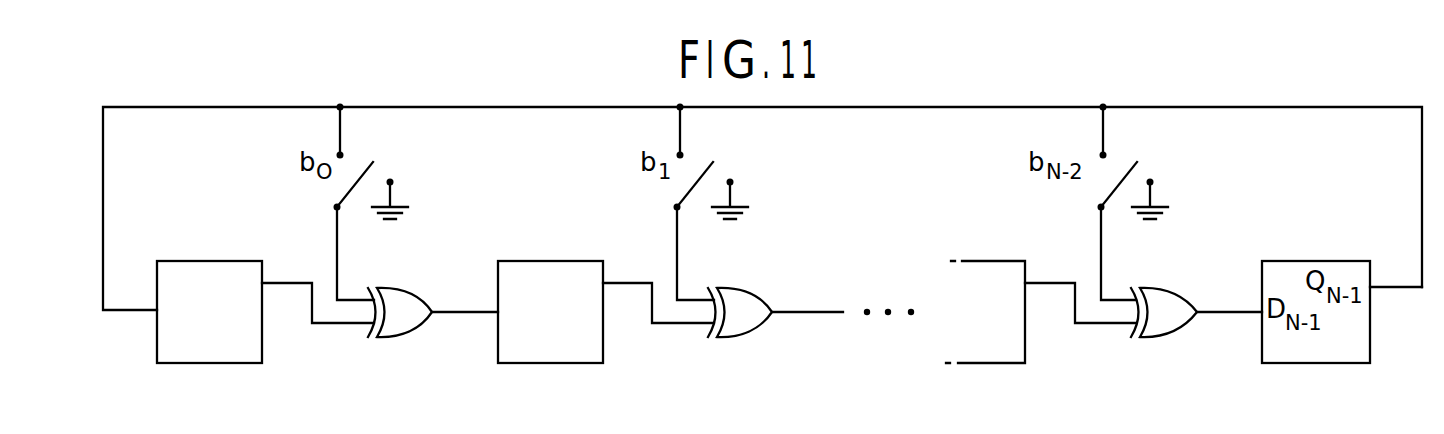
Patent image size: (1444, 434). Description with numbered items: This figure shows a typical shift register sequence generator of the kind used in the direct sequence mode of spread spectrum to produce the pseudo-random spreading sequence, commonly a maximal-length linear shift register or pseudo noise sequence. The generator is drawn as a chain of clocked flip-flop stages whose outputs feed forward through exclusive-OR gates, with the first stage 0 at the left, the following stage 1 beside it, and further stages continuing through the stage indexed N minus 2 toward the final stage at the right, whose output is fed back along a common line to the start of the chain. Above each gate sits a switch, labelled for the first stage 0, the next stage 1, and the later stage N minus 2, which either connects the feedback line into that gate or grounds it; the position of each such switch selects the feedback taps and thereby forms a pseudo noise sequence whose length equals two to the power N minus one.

The first stage flip-flop (D0/Q0) 0 is at (209, 312).
The second stage flip-flop (D0/Q1) 1 is at (550, 312).
The stage N-2 flip-flop (Q N-2) 2 is at (985, 312).